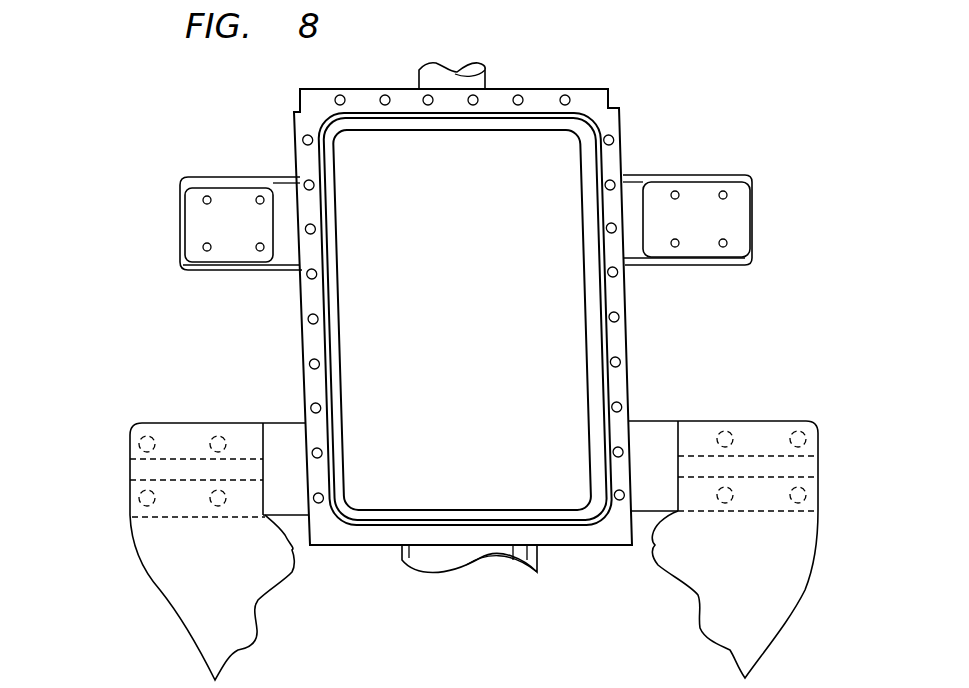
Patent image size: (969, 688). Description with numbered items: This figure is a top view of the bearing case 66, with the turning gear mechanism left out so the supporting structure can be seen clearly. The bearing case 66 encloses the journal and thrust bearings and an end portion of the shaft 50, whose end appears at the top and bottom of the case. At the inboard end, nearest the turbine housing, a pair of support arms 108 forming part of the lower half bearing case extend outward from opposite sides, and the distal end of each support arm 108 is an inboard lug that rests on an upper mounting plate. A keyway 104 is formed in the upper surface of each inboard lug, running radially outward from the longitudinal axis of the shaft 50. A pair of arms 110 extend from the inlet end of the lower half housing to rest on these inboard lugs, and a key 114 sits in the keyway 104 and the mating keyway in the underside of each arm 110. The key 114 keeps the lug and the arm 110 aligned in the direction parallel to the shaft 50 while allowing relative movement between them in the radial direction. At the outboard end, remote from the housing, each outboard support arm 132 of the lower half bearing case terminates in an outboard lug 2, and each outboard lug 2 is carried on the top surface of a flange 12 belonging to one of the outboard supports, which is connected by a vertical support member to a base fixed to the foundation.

The outboard lug 2 is at (212, 188).
The flange 12 is at (212, 272).
The shaft 50 is at (487, 79).
The bearing case 66 is at (462, 282).
The keyway 104 is at (152, 462).
The support arm 108 is at (285, 432).
The arm 110 is at (172, 607).
The key 114 is at (186, 470).
The outboard support arm 132 is at (287, 192).